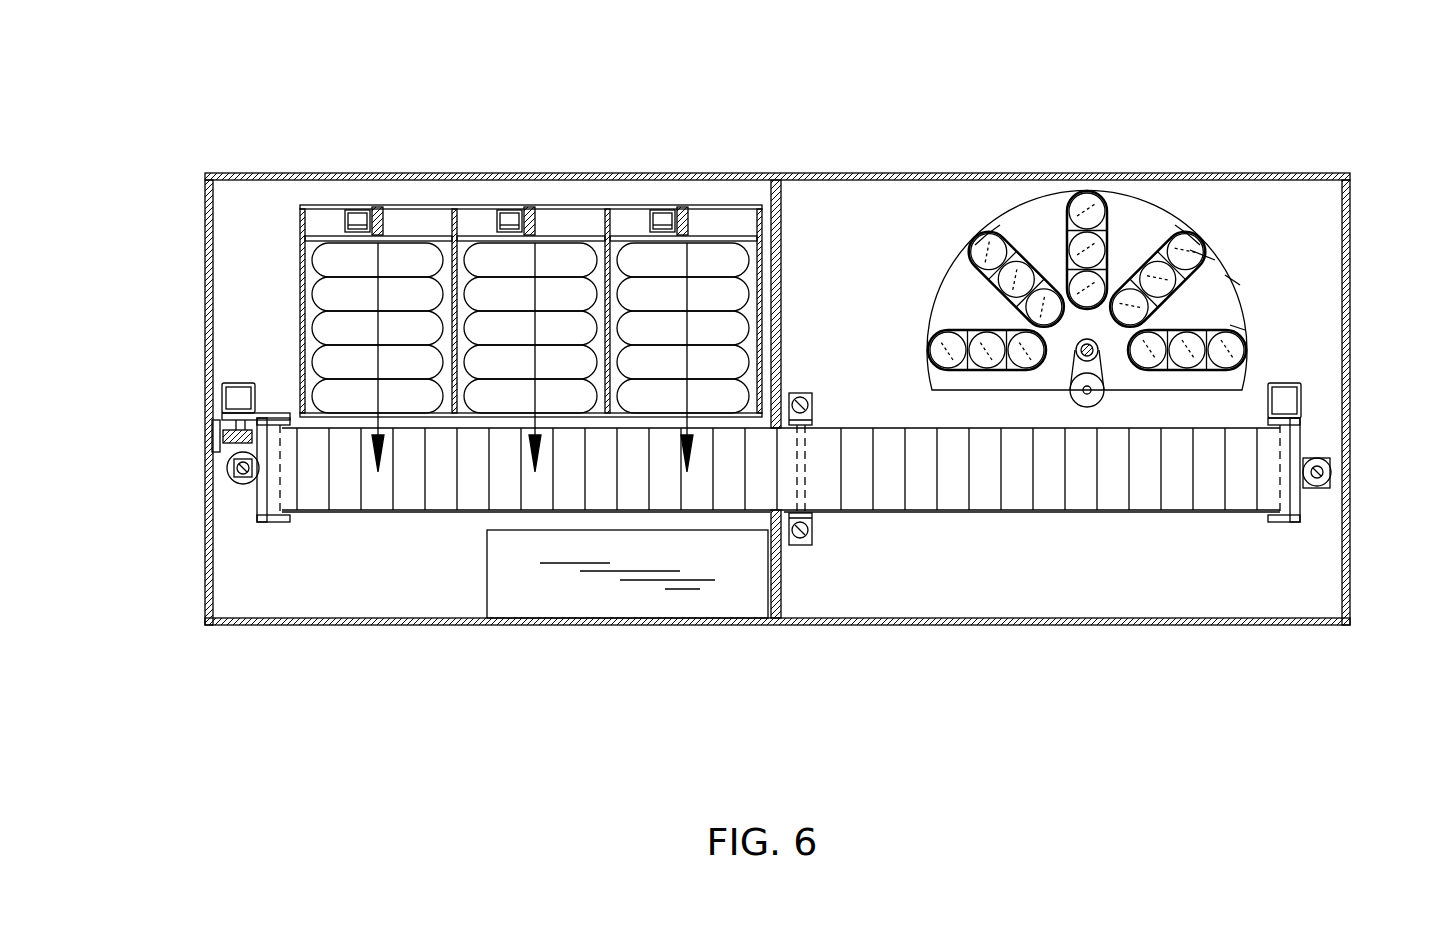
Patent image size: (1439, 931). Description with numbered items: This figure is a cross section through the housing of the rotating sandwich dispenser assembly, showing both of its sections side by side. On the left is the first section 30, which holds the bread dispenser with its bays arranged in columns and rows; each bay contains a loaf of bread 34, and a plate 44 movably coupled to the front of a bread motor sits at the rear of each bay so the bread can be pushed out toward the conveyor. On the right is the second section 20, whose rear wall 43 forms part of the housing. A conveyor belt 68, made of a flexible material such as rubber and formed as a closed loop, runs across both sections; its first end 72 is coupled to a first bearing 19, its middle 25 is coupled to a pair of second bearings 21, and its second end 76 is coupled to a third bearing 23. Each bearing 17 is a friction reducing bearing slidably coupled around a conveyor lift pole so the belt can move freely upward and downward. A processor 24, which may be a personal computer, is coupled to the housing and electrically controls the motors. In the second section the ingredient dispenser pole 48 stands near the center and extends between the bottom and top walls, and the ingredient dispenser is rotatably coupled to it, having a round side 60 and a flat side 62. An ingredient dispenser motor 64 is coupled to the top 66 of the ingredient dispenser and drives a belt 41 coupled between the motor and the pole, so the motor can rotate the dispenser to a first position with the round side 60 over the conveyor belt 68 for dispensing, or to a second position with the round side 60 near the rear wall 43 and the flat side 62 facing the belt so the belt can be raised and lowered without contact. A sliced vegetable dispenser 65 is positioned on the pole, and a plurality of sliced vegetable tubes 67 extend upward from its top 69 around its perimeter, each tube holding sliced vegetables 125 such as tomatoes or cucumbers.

The first section 30 is at (767, 354).
The rear wall 43 is at (672, 175).
The bearing 17 is at (808, 330).
The plate 44 is at (318, 238).
The loaf of bread 34 is at (482, 258).
The middle of the conveyor belt 25 is at (832, 430).
The conveyor belt 68 is at (387, 550).
The flat side 62 is at (986, 425).
The second bearing 21 is at (812, 393).
The first bearing 19 is at (227, 468).
The first end of the conveyor belt 72 is at (272, 552).
The second end of the conveyor belt 76 is at (1285, 555).
The third bearing 23 is at (1332, 478).
The processor 24 is at (486, 580).
The second section 20 is at (1174, 368).
The round side 60 is at (1180, 180).
The top of the ingredient dispenser 66 is at (1012, 215).
The top of the sliced vegetable dispenser 69 is at (1125, 210).
The sliced vegetables 125 is at (1080, 205).
The sliced vegetable tube 67 is at (1208, 255).
The sliced vegetable dispenser 65 is at (1235, 280).
The belt 41 is at (1072, 372).
The ingredient dispenser pole 48 is at (1100, 360).
The ingredient dispenser motor 64 is at (1087, 407).